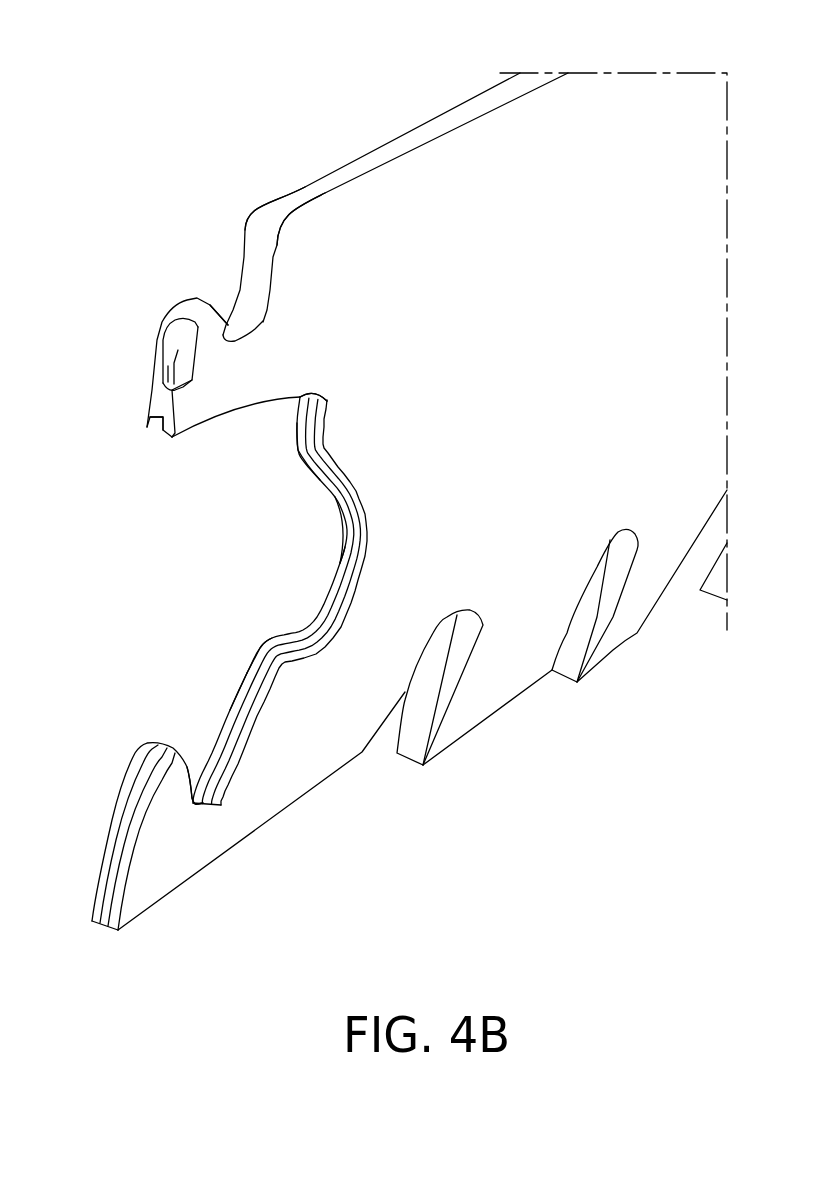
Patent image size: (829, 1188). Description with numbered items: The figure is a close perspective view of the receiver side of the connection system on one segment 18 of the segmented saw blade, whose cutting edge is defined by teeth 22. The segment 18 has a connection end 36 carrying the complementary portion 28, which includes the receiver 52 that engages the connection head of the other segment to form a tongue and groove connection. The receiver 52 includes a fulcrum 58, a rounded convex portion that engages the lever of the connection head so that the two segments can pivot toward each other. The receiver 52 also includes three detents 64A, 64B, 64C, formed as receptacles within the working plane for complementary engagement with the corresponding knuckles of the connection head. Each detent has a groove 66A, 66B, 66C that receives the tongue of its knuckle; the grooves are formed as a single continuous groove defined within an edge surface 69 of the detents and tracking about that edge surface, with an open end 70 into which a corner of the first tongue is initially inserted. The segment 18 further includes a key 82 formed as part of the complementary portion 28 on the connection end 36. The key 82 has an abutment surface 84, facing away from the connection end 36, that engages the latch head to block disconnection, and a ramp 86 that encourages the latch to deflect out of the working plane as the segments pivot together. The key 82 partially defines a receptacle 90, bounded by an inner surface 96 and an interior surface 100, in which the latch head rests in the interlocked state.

The segment 18 is at (487, 143).
The teeth 22 is at (610, 645).
The complementary portion 28 is at (322, 100).
The connection end 36 is at (118, 164).
The receiver 52 is at (347, 457).
The fulcrum 58 is at (160, 792).
The detent 64A is at (240, 453).
The detent 64B is at (307, 517).
The detent 64C is at (188, 737).
The groove 66A is at (319, 418).
The groove 66B is at (343, 553).
The groove 66C is at (247, 713).
The edge surface 69 is at (262, 650).
The open end 70 is at (160, 434).
The key 82 is at (172, 299).
The abutment surface 84 is at (234, 314).
The ramp 86 is at (165, 358).
The receptacle 90 is at (230, 273).
The inner surface 96 is at (262, 257).
The interior surface 100 is at (240, 325).